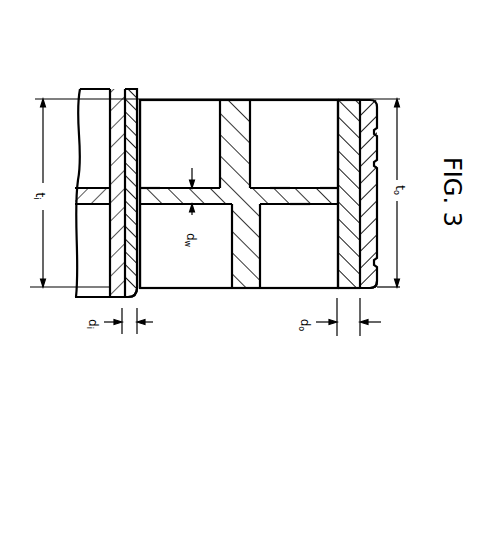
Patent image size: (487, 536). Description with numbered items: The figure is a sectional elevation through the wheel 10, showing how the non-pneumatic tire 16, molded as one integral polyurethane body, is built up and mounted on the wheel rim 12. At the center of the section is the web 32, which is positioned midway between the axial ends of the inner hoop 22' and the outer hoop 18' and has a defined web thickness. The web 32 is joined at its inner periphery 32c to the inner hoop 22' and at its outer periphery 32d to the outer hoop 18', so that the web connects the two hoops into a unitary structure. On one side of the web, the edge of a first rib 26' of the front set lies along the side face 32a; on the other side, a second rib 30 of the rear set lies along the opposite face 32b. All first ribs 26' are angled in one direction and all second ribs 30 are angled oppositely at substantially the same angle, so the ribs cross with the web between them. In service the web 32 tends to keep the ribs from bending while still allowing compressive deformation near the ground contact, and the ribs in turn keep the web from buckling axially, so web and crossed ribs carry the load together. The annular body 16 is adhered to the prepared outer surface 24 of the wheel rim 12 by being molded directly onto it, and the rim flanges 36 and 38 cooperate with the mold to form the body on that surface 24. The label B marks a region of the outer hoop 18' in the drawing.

The wheel 10 is at (385, 302).
The wheel rim 12 is at (78, 312).
The non-pneumatic tire (NPT) 16 is at (293, 97).
The outer hoop 18' is at (349, 168).
The inner hoop 22' is at (150, 167).
The outer surface of wheel rim 24 is at (110, 90).
The first ribs 26' is at (240, 168).
The second ribs 30 is at (261, 268).
The web 32 is at (300, 188).
The side face of web 32a is at (280, 188).
The face of web 32b is at (300, 205).
The inner periphery of web 32c is at (142, 187).
The outer periphery of web 32d is at (336, 188).
The flange 36 is at (139, 90).
The flange 38 is at (139, 292).
The outer coating B is at (369, 100).